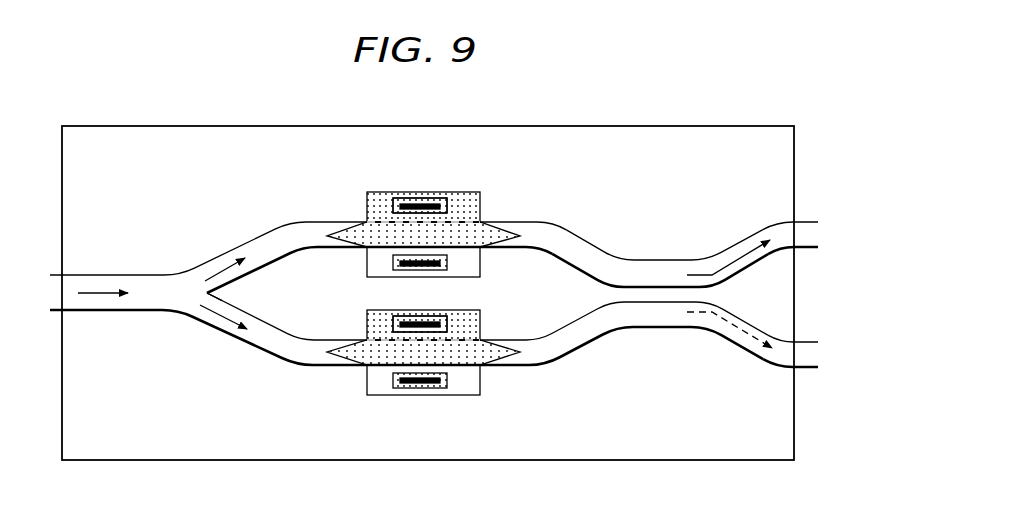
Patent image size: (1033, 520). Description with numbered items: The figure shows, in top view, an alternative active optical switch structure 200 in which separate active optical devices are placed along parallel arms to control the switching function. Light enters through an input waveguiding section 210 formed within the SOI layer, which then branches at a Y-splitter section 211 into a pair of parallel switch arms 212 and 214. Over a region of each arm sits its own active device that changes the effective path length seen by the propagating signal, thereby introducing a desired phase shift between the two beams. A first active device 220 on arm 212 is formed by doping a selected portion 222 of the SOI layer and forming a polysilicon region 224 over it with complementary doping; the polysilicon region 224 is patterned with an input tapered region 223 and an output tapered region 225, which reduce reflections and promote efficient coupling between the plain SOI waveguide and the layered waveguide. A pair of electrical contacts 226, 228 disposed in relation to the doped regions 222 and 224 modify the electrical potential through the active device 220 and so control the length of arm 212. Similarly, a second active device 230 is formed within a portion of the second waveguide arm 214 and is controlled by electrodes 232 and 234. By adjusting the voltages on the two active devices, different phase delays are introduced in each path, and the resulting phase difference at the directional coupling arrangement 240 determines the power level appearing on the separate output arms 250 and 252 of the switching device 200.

The active optical switch structure 200 is at (632, 126).
The input waveguiding section 210 is at (104, 275).
The Y-splitter section 211 is at (176, 312).
The first switch arm 212 is at (228, 248).
The second waveguide arm 214 is at (236, 336).
The first active device 220 is at (415, 216).
The doped SOI portion 222 is at (368, 260).
The input tapered region 223 is at (352, 232).
The polysilicon region 224 is at (470, 207).
The output tapered region 225 is at (553, 223).
The electrical contact 226 is at (447, 263).
The electrical contact 228 is at (423, 200).
The second active device 230 is at (395, 365).
The electrode 232 is at (418, 388).
The electrode 234 is at (420, 318).
The directional coupling arrangement 240 is at (665, 259).
The first output arm 250 is at (778, 222).
The second output arm 252 is at (768, 367).